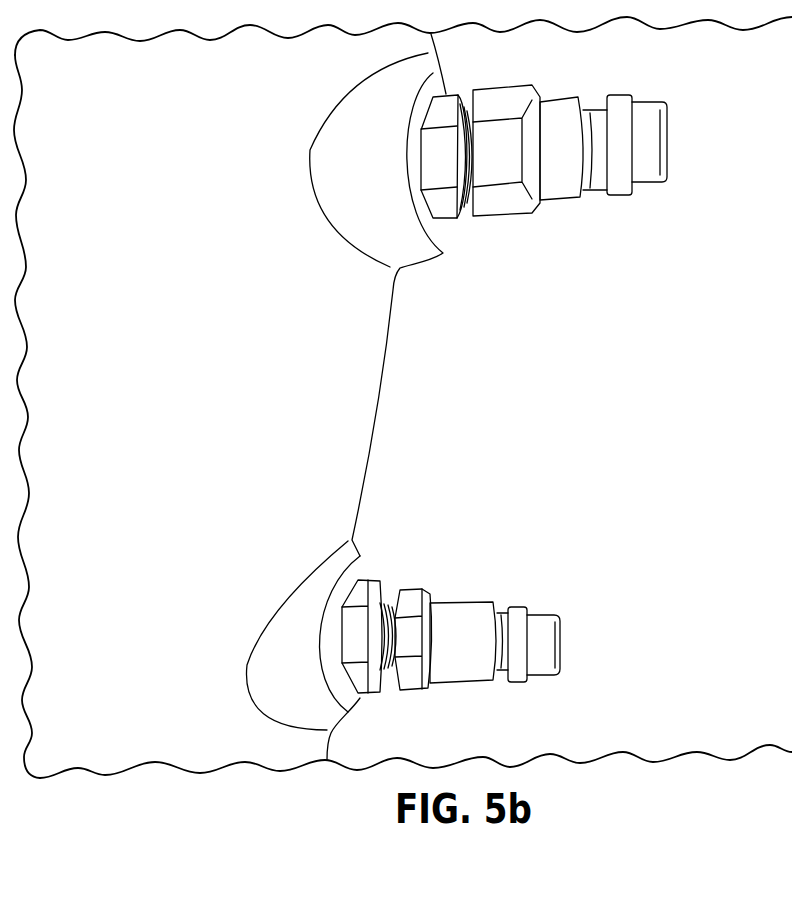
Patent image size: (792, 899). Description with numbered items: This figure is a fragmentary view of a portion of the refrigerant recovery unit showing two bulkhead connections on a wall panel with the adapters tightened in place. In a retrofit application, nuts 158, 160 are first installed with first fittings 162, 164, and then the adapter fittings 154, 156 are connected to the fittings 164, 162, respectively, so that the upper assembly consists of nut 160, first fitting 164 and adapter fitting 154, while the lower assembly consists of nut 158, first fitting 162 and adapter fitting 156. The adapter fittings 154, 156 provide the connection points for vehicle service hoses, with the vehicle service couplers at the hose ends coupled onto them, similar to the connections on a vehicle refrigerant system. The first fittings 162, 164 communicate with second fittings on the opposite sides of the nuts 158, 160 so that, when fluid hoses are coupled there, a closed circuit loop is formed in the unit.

The R134a adapter fitting 154 is at (563, 192).
The R134a adapter fitting 156 is at (470, 615).
The nut 158 is at (363, 683).
The nut 160 is at (454, 210).
The first fitting 162 is at (392, 602).
The first fitting 164 is at (466, 118).